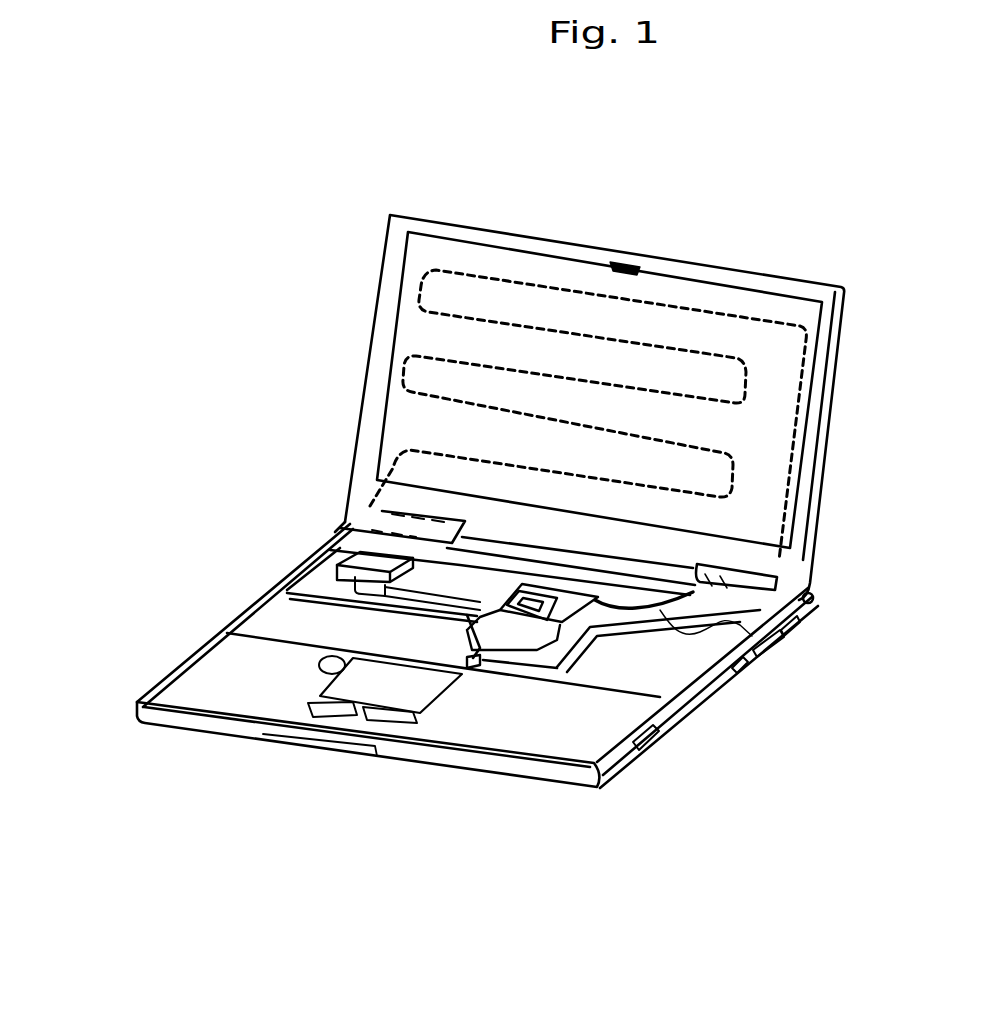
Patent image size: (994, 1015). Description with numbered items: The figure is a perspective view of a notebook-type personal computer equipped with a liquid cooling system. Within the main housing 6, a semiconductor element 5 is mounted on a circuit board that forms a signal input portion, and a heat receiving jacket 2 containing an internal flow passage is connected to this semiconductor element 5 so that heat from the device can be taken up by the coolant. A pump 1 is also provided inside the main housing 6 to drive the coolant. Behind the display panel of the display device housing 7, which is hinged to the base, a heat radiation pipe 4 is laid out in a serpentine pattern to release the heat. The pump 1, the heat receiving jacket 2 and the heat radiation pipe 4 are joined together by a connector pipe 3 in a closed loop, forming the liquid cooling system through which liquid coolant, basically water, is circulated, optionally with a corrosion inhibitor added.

The pump 1 is at (353, 523).
The heat receiving jacket 2 is at (510, 625).
The connector pipe 3 is at (757, 650).
The heat radiation pipe 4 is at (473, 273).
The semiconductor element 5 is at (560, 607).
The main housing 6 is at (260, 735).
The display device housing 7 is at (673, 265).